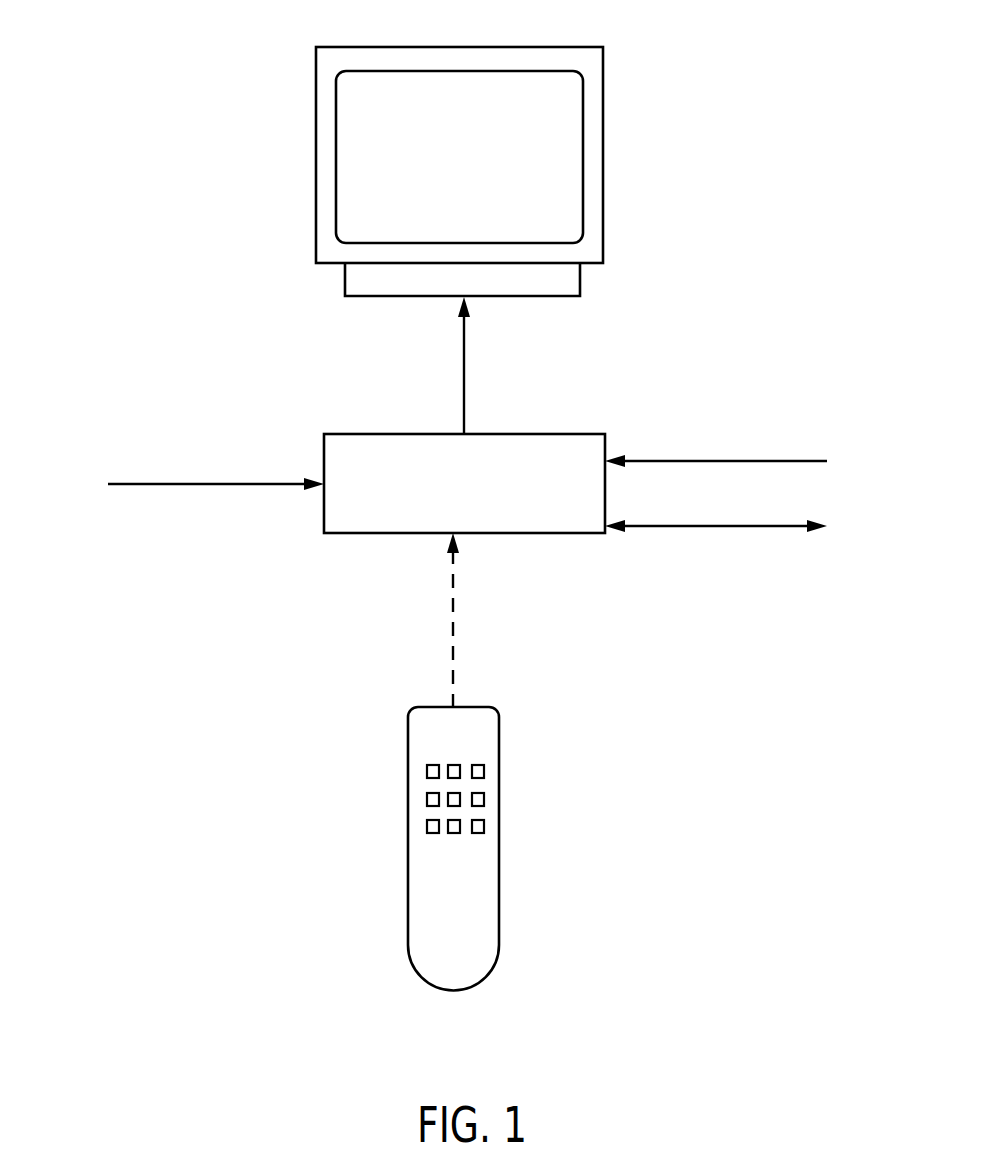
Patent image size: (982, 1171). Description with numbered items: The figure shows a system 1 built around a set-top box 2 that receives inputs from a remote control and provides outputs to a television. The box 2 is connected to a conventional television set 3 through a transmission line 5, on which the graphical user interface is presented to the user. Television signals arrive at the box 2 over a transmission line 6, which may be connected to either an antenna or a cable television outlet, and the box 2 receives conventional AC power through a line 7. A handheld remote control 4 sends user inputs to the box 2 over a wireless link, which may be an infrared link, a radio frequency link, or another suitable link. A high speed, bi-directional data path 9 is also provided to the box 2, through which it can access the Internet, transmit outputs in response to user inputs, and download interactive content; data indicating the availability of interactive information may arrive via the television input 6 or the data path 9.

The system 1 is at (759, 74).
The set-top box 2 is at (562, 533).
The television set 3 is at (603, 234).
The handheld remote control 4 is at (499, 923).
The transmission line 5 is at (464, 373).
The transmission line 6 is at (760, 461).
The line 7 is at (182, 484).
The bi-directional data path 9 is at (740, 526).